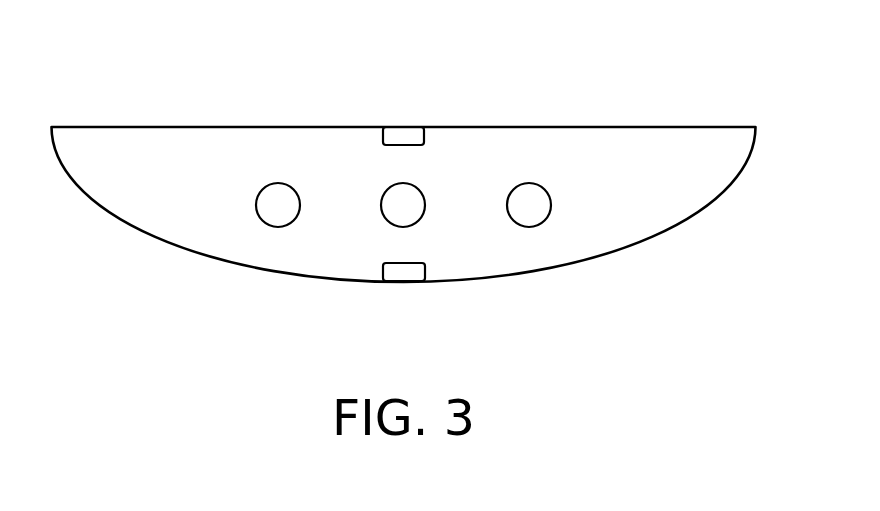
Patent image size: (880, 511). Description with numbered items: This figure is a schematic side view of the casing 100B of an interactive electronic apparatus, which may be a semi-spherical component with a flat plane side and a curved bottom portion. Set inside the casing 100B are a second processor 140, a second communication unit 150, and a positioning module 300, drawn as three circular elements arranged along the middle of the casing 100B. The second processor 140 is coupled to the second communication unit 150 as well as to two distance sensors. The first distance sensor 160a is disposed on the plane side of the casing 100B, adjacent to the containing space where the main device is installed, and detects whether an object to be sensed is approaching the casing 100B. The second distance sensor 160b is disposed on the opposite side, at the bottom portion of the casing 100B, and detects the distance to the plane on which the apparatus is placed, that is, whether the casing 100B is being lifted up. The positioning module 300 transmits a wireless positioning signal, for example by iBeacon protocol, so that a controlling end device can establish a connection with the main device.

The casing 100B is at (140, 127).
The second processor 140 is at (402, 205).
The second communication unit 150 is at (278, 205).
The positioning module 300 is at (529, 207).
The first distance sensor 160a is at (410, 133).
The second distance sensor 160b is at (413, 277).